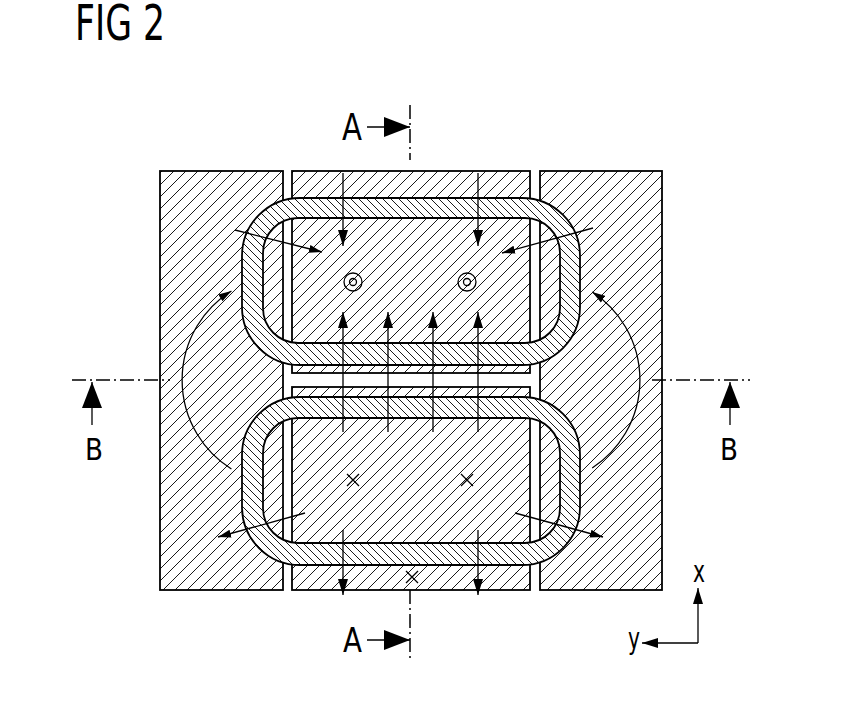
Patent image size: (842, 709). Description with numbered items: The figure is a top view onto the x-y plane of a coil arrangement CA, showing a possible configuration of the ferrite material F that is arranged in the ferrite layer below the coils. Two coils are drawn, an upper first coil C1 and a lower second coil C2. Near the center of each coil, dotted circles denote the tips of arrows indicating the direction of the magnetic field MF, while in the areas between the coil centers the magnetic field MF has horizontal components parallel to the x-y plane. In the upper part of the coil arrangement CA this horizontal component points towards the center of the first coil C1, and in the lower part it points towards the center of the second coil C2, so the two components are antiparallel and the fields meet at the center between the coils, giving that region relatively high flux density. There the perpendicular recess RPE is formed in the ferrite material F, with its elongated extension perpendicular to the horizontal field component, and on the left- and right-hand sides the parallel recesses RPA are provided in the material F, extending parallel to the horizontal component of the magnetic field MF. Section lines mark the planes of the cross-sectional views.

The coil arrangement CA is at (418, 386).
The ferrite material F is at (652, 197).
The first coil C1 is at (582, 275).
The second coil C2 is at (582, 503).
The magnetic field MF is at (607, 362).
The perpendicular recess RPE is at (402, 383).
The parallel recesses RPA is at (287, 593).